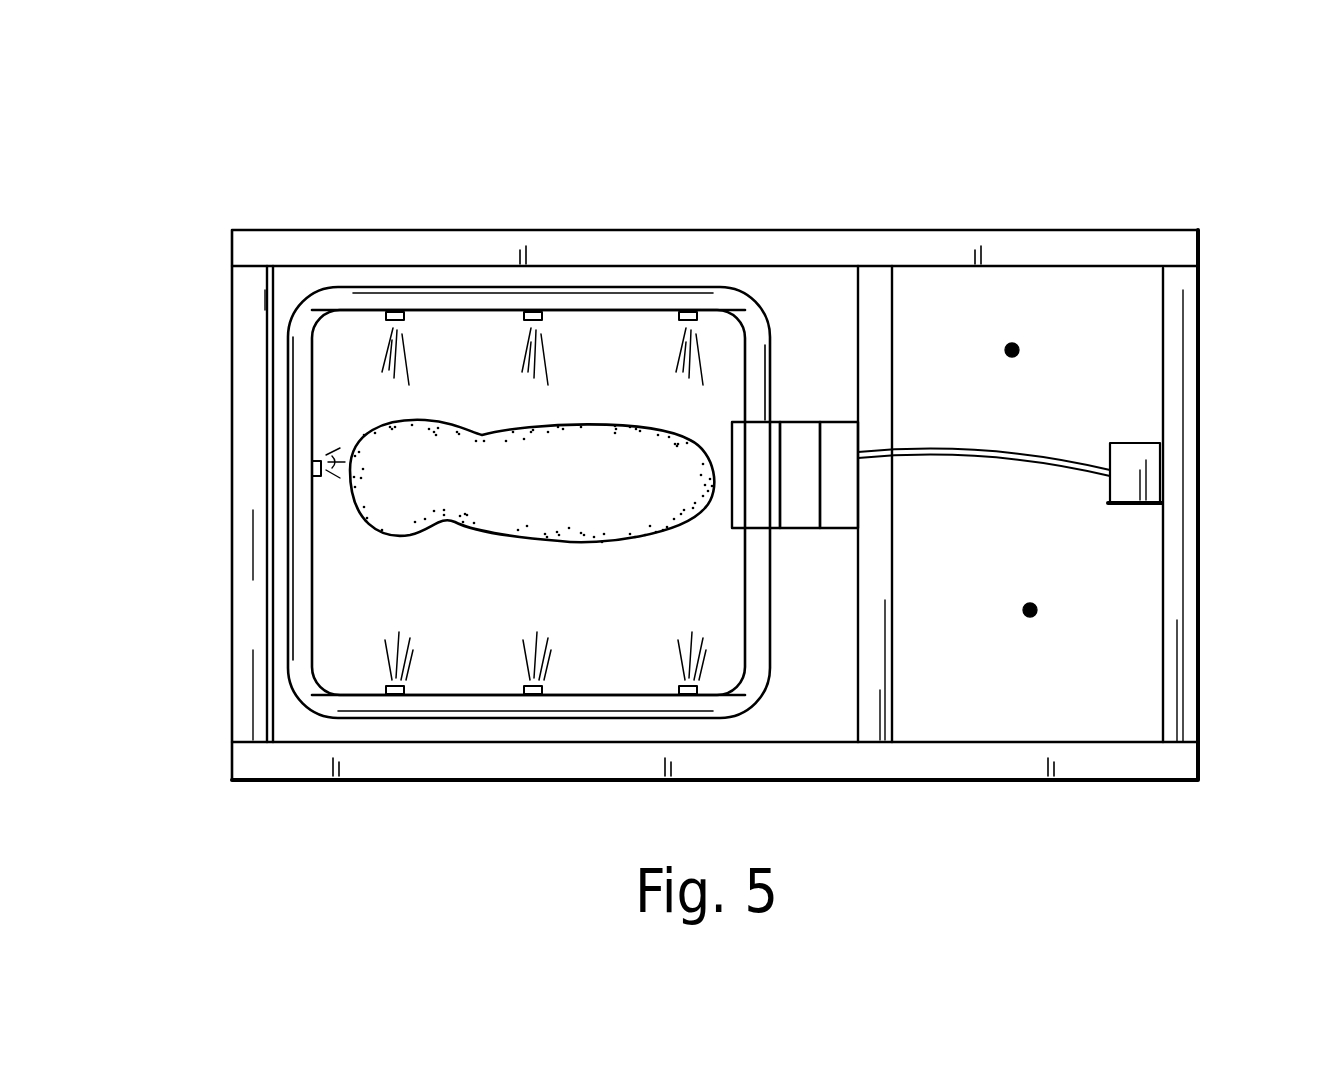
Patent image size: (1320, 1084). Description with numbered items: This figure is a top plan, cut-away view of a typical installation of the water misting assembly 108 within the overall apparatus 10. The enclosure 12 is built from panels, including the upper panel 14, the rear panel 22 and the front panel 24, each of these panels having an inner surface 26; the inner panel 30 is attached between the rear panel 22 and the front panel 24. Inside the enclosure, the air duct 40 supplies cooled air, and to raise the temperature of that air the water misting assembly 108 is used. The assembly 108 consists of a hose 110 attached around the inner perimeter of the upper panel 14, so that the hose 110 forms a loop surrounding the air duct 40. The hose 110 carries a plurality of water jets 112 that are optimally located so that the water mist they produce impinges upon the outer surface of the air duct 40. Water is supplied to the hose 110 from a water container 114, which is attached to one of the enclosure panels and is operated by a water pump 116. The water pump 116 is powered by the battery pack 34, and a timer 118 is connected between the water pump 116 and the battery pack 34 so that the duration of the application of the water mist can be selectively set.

The apparatus 10 is at (707, 434).
The enclosure 12 is at (1100, 703).
The upper panel 14 is at (1030, 610).
The rear panel 22 is at (1180, 372).
The front panel 24 is at (248, 370).
The inner surface 26 is at (1165, 656).
The inner panel 30 is at (1012, 350).
The battery pack 34 is at (1125, 478).
The air duct 40 is at (400, 497).
The water misting assembly 108 is at (452, 440).
The hose 110 is at (335, 298).
The water jets 112 is at (541, 312).
The water container 114 is at (738, 433).
The water pump 116 is at (790, 433).
The timer 118 is at (835, 433).